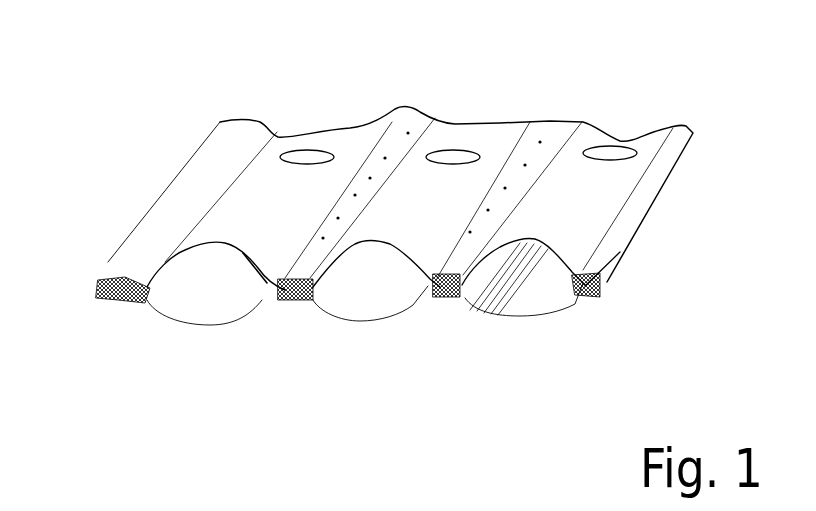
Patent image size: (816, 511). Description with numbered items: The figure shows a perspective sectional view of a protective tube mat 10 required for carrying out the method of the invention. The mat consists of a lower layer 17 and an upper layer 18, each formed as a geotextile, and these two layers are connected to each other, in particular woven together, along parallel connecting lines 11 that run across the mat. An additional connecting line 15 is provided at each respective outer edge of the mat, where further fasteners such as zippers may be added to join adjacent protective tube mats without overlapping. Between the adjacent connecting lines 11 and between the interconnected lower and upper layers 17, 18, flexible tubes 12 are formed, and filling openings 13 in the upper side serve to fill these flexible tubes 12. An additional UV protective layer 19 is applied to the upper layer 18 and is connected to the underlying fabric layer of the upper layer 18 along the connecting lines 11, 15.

The protective tube mat 10 is at (96, 96).
The connecting lines 11 is at (300, 263).
The flexible tubes 12 is at (387, 282).
The filling openings 13 is at (297, 150).
The connecting line 15 is at (118, 297).
The lower layer 17 is at (173, 320).
The upper layer 18 is at (262, 265).
The UV protective layer 19 is at (117, 270).